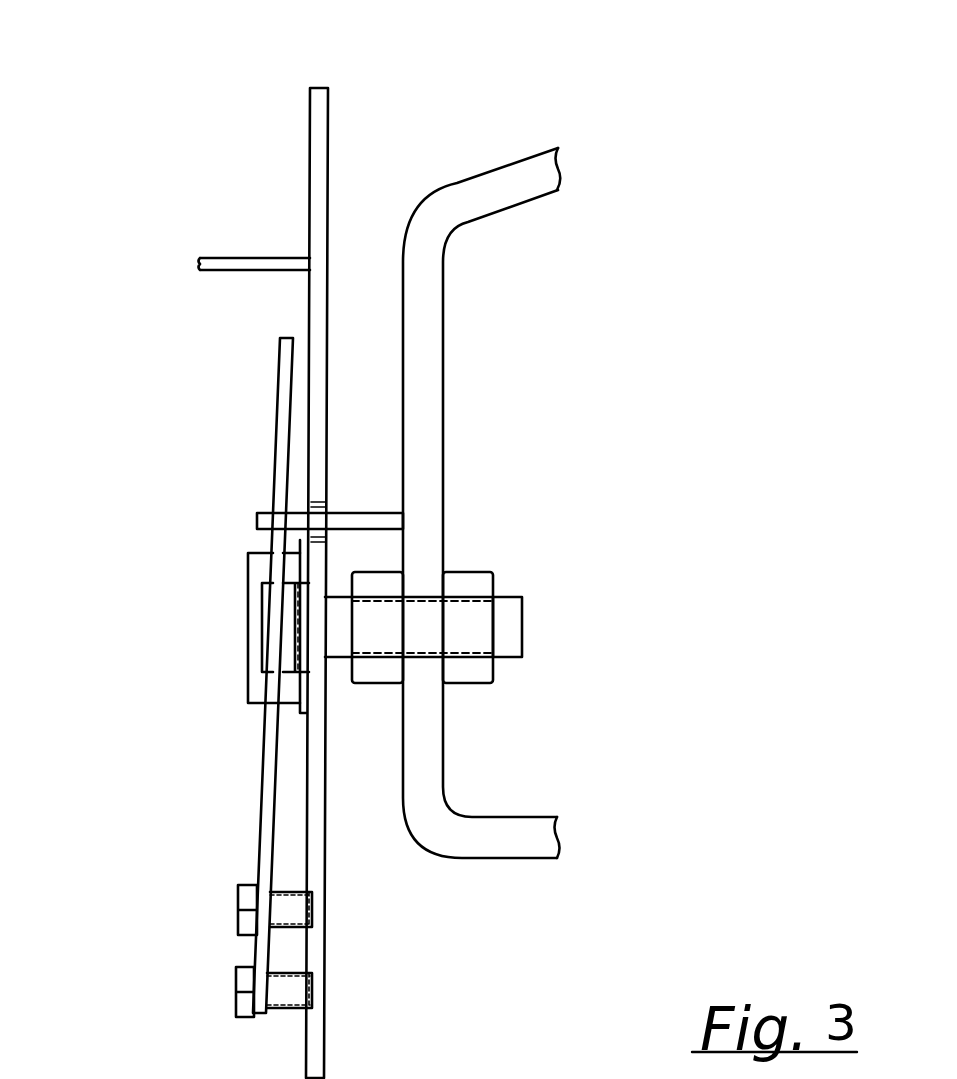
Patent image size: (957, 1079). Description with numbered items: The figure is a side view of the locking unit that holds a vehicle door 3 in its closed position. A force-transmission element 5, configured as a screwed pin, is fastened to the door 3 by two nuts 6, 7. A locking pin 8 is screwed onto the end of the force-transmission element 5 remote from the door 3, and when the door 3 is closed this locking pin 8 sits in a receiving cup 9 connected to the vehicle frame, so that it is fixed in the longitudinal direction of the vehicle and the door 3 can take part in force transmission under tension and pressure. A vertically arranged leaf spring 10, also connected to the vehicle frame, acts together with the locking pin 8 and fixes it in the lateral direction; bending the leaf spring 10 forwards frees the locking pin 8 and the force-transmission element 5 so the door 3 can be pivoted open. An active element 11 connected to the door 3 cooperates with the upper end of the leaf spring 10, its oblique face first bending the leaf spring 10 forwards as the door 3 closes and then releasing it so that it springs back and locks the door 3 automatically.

The door 3 is at (503, 188).
The force-transmission element 5 is at (502, 625).
The nut 6 is at (380, 582).
The nut 7 is at (478, 673).
The locking pin 8 is at (300, 660).
The receiving cup 9 is at (262, 563).
The leaf spring 10 is at (276, 758).
The active element 11 is at (360, 518).